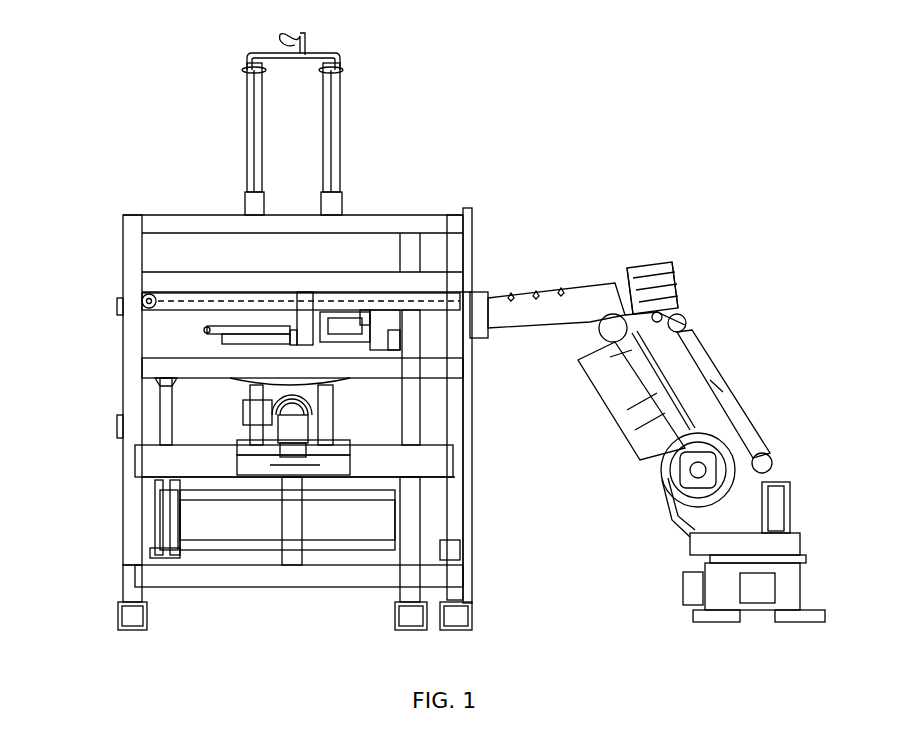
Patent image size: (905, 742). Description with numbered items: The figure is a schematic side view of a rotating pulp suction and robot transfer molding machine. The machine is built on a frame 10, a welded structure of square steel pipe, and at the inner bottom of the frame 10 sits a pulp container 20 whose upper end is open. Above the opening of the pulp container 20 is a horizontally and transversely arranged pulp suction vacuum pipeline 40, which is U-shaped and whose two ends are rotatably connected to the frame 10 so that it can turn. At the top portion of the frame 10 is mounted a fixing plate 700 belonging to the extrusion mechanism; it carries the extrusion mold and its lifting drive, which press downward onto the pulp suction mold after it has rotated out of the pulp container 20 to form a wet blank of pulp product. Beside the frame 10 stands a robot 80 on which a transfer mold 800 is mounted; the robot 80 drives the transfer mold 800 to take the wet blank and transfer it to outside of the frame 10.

The frame 10 is at (130, 348).
The pulp container 20 is at (330, 510).
The pulp suction vacuum pipeline 40 is at (305, 415).
The robot 80 is at (615, 290).
The fixing plate 700 is at (378, 215).
The transfer mold 800 is at (380, 338).